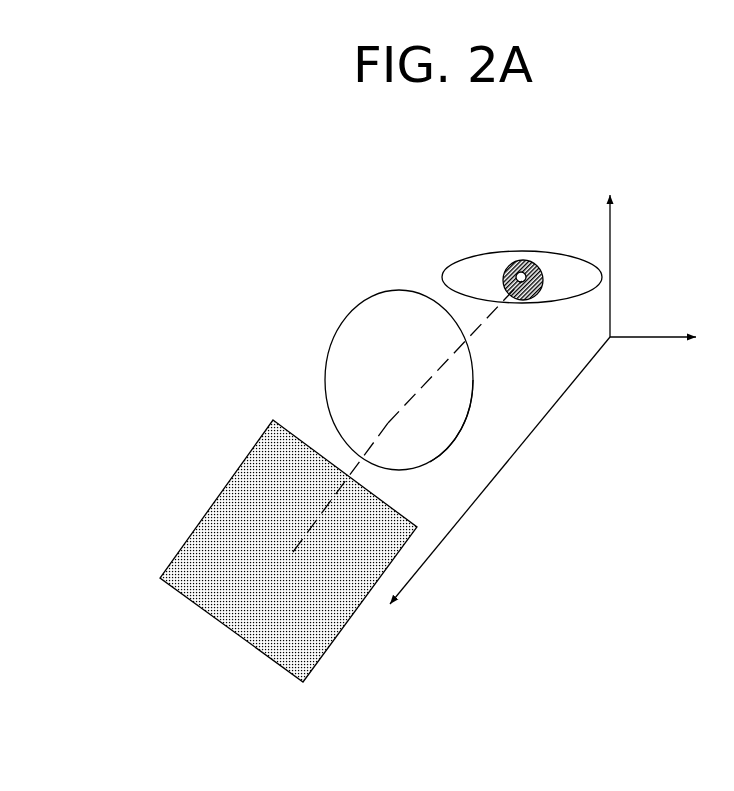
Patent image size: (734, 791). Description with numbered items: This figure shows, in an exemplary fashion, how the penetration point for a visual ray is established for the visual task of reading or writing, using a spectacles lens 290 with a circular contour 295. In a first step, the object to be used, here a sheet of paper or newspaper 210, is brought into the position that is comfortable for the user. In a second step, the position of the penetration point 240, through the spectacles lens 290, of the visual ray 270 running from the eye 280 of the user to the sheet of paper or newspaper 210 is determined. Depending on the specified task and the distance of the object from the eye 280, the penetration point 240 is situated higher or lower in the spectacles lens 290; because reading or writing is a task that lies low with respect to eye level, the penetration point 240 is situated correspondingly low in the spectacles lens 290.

The sheet of paper or newspaper 210 is at (225, 627).
The penetration point 240 is at (382, 417).
The visual ray 270 is at (487, 325).
The eye 280 is at (523, 251).
The spectacles lens 290 is at (403, 319).
The circular contour 295 is at (465, 434).